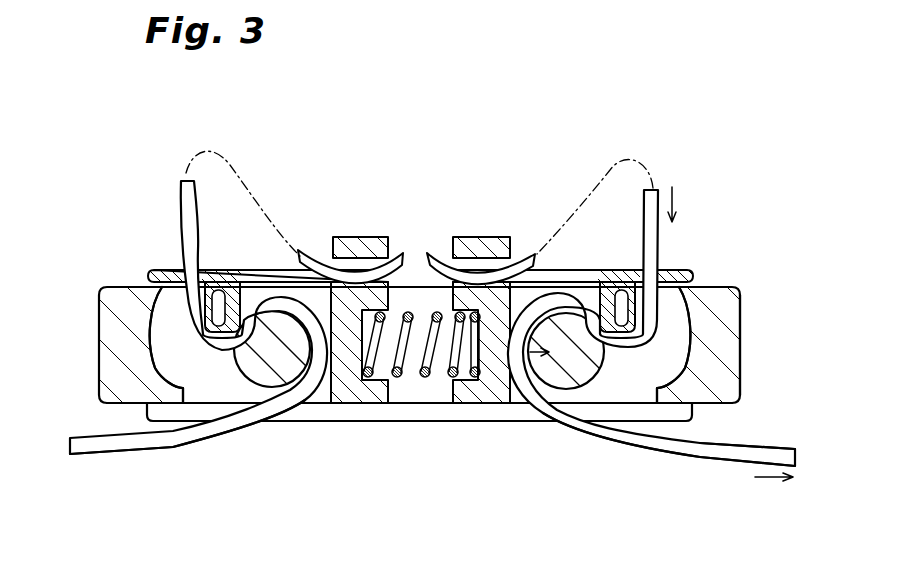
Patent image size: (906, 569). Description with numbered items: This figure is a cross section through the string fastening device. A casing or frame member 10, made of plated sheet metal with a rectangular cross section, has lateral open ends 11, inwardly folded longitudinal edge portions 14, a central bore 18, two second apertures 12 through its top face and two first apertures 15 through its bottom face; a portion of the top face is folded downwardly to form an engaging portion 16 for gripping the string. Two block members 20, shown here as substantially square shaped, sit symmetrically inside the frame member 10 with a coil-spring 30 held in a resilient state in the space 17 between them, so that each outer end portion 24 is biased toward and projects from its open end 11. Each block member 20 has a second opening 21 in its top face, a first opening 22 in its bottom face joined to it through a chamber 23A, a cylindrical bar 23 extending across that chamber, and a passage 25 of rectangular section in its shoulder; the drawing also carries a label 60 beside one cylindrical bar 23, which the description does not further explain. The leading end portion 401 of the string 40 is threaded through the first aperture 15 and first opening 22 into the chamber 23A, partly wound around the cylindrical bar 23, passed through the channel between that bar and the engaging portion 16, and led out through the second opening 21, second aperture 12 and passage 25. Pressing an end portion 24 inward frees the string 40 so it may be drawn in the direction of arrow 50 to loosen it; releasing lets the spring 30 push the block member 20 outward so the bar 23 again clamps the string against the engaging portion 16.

The frame member 10 is at (687, 312).
The lateral open end 11 is at (697, 284).
The second aperture 12 is at (176, 267).
The longitudinal edge portion 14 is at (508, 421).
The first aperture 15 is at (270, 425).
The engaging portion 16 is at (572, 270).
The space 17 is at (438, 393).
The central bore 18 is at (412, 282).
The block member 20 is at (730, 322).
The second opening 21 is at (162, 287).
The first opening 22 is at (302, 388).
The cylindrical bar 23 is at (567, 377).
The chamber 23A is at (182, 337).
The end portion 24 is at (740, 372).
The passage 25 is at (532, 253).
The coil-spring 30 is at (421, 376).
The string 40 is at (713, 448).
The arrow 50 is at (794, 478).
The roller position 60 is at (557, 351).
The leading end portion 401 is at (652, 187).